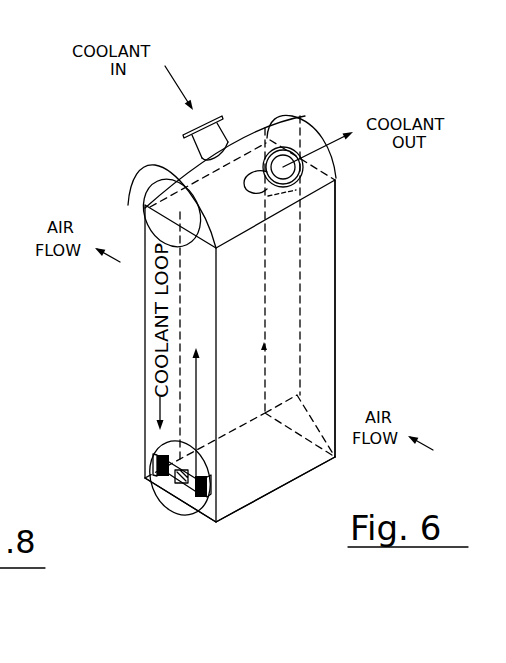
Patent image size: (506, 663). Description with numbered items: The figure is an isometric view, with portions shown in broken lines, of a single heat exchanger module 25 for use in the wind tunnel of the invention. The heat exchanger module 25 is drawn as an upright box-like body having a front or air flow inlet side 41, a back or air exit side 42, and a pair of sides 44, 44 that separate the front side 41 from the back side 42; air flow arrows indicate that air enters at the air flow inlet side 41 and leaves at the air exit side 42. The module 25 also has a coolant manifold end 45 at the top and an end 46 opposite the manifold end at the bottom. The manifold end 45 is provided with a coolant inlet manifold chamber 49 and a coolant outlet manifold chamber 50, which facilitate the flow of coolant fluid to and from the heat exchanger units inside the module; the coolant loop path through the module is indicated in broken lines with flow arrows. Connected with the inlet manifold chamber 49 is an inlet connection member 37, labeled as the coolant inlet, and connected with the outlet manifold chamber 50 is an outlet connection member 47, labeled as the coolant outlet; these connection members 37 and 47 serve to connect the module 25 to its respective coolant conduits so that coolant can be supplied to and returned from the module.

The heat exchanger module 25 is at (341, 251).
The inlet connection member 37 is at (213, 118).
The front or air flow inlet side 41 is at (334, 331).
The back or air exit side 42 is at (147, 317).
The sides 44 is at (310, 222).
The coolant manifold end 45 is at (305, 117).
The end opposite the manifold end 46 is at (247, 478).
The outlet connection member 47 is at (308, 184).
The coolant inlet manifold chamber 49 is at (158, 206).
The coolant outlet manifold chamber 50 is at (87, 302).